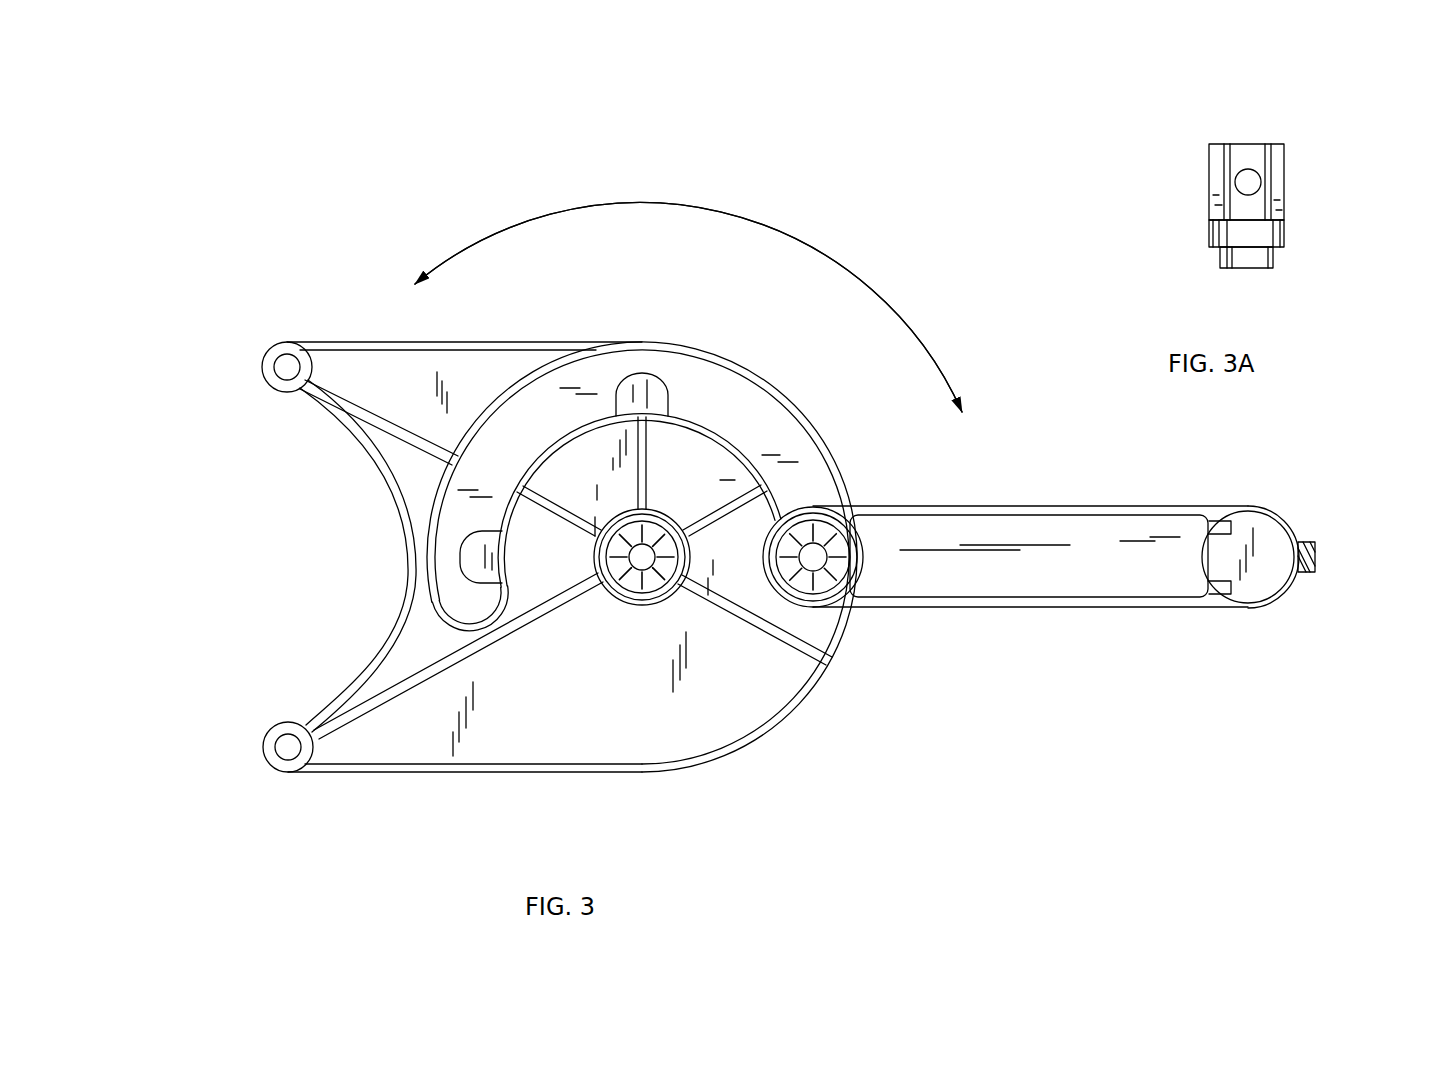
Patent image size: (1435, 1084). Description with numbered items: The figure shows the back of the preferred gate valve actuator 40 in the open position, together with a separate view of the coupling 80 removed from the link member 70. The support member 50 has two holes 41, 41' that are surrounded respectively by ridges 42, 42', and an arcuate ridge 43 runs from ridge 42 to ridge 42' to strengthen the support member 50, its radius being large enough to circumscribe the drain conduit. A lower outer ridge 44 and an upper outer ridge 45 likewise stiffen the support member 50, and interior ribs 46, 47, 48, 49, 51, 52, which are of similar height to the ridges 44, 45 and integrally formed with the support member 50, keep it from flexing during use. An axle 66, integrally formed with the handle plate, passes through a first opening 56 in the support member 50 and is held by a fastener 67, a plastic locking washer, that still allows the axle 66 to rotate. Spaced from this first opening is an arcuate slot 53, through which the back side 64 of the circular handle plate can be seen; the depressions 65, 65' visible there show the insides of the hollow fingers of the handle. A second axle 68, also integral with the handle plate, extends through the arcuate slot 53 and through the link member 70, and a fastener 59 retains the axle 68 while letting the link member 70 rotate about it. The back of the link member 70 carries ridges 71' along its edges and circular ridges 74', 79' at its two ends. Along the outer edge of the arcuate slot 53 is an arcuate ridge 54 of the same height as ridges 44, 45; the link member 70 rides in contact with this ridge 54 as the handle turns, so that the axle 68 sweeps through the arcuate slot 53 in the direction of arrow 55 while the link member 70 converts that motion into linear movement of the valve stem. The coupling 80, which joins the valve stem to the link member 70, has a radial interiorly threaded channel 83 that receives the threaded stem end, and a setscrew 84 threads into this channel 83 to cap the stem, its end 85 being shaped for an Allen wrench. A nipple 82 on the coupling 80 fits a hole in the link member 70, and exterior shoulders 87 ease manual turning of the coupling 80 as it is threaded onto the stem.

In FIG. 3, the gate valve actuator 40 is at (565, 132).
In FIG. 3, the hole 41 is at (251, 363).
In FIG. 3, the hole 41' is at (245, 732).
In FIG. 3, the ridge 42 is at (257, 347).
In FIG. 3, the ridge 42' is at (251, 752).
In FIG. 3, the arcuate ridge 43 is at (328, 556).
In FIG. 3, the lower outer ridge 44 is at (465, 789).
In FIG. 3, the upper outer ridge 45 is at (464, 324).
In FIG. 3, the interior rib 46 is at (379, 417).
In FIG. 3, the interior rib 47 is at (495, 642).
In FIG. 3, the interior rib 48 is at (773, 633).
In FIG. 3, the interior rib 49 is at (571, 506).
In FIG. 3, the support member 50 is at (511, 534).
In FIG. 3, the interior rib 51 is at (676, 463).
In FIG. 3, the interior rib 52 is at (713, 510).
In FIG. 3, the arcuate slot 53 is at (628, 539).
In FIG. 3, the arcuate ridge 54 is at (669, 557).
In FIG. 3, the arrow 55 is at (820, 255).
In FIG. 3, the first opening 56 is at (599, 548).
In FIG. 3, the fastener 59 is at (841, 572).
In FIG. 3, the back side 64 is at (679, 478).
In FIG. 3, the depression 65 is at (673, 361).
In FIG. 3, the depression 65' is at (423, 558).
In FIG. 3, the axle 66 is at (638, 583).
In FIG. 3, the fastener 67 is at (663, 573).
In FIG. 3, the axle 68 is at (792, 562).
In FIG. 3, the link member 70 is at (989, 502).
In FIG. 3, the ridges 71' is at (1029, 552).
In FIG. 3, the circular ridge 74' is at (1246, 526).
In FIG. 3, the circular ridge 79' is at (1030, 537).
In FIG. 3, the coupling 80 is at (1259, 503).
In FIG. 3A, the coupling 80 is at (1168, 106).
In FIG. 3A, the nipple 82 is at (1288, 267).
In FIG. 3A, the threaded channel 83 is at (1243, 172).
In FIG. 3, the setscrew 84 is at (1357, 524).
In FIG. 3, the end 85 is at (1318, 548).
In FIG. 3, the exterior shoulders 87 is at (1219, 527).
In FIG. 3A, the exterior shoulders 87 is at (1253, 179).